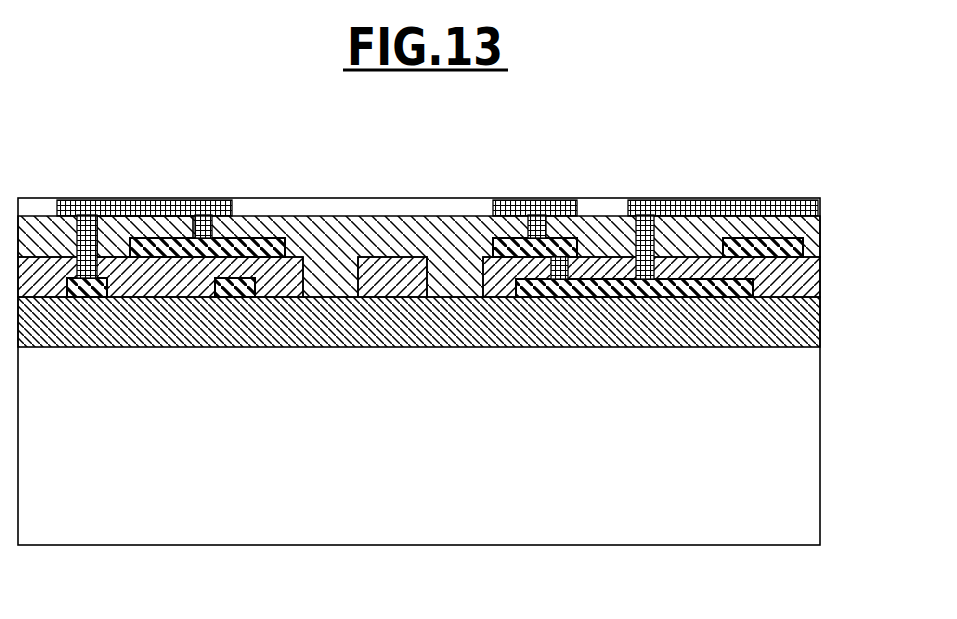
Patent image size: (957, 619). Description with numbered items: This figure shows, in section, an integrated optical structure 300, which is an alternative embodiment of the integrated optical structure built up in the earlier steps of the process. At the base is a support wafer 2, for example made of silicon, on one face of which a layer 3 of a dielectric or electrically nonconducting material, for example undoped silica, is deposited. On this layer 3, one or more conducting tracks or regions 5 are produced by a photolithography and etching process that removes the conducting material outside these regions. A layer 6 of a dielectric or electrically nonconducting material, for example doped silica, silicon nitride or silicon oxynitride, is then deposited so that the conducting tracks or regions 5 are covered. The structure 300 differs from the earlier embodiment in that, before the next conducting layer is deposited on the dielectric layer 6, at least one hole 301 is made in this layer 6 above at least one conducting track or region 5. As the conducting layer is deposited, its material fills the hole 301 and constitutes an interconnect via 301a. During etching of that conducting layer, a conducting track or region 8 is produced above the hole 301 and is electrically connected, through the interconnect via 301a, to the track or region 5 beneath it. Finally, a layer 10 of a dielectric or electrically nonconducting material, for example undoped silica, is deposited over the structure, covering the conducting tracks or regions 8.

The support wafer 2 is at (808, 425).
The layer 3 is at (796, 323).
The conducting tracks or regions 5 is at (692, 262).
The layer 6 is at (796, 282).
The conducting tracks or regions 8 is at (482, 238).
The layer 10 is at (798, 229).
The integrated optical structure 300 is at (456, 333).
The hole 301 is at (588, 262).
The interconnect via 301a is at (558, 200).